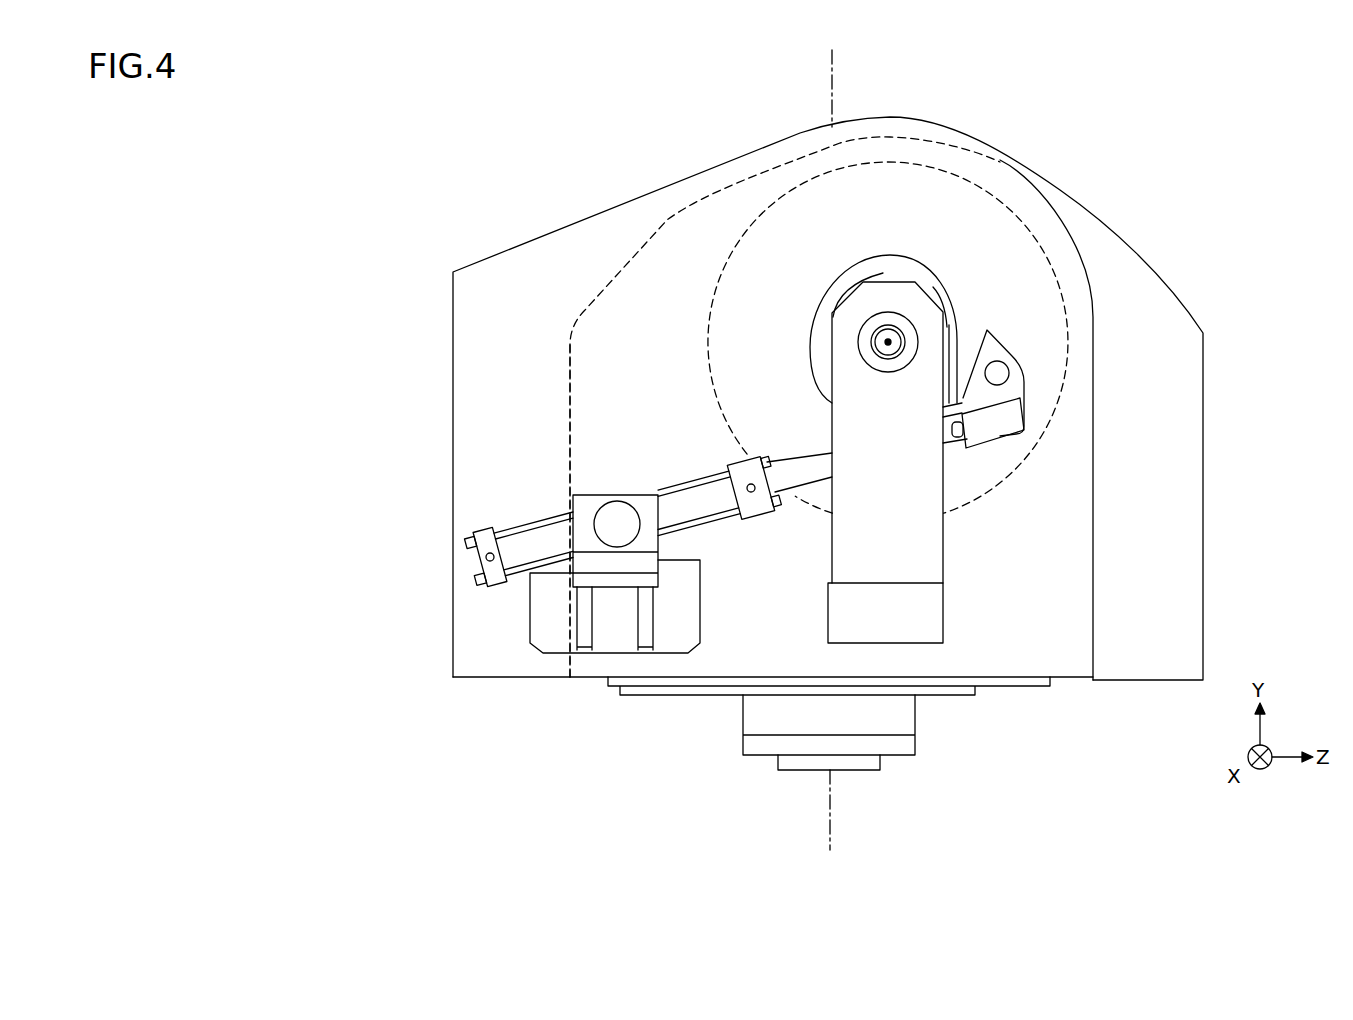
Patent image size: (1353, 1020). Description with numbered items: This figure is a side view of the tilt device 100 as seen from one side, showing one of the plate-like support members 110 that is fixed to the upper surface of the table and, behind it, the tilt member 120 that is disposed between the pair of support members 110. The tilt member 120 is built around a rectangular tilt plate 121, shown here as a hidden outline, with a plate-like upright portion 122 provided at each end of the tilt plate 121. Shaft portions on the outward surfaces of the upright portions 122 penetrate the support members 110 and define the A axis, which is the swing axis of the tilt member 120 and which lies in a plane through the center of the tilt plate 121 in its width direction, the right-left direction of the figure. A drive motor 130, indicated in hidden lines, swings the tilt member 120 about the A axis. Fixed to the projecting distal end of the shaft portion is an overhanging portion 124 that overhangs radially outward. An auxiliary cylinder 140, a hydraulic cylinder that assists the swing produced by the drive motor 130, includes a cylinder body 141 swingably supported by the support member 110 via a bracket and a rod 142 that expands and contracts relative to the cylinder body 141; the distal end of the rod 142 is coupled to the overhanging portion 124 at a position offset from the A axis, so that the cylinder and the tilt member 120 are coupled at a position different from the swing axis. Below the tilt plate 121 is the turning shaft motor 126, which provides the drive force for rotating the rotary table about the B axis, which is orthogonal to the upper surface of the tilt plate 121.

The tilt device 100 is at (352, 197).
The support member 110 is at (477, 617).
The tilt member 120 is at (1218, 278).
The tilt plate 121 is at (585, 680).
The upright portion 122 is at (1183, 438).
The overhanging portion 124 is at (965, 320).
The turning shaft motor 126 is at (750, 720).
The drive motor 130 is at (733, 245).
The auxiliary cylinder 140 is at (512, 470).
The cylinder body 141 is at (533, 535).
The rod 142 is at (813, 467).
The A axis A is at (888, 342).
The B axis B is at (828, 787).